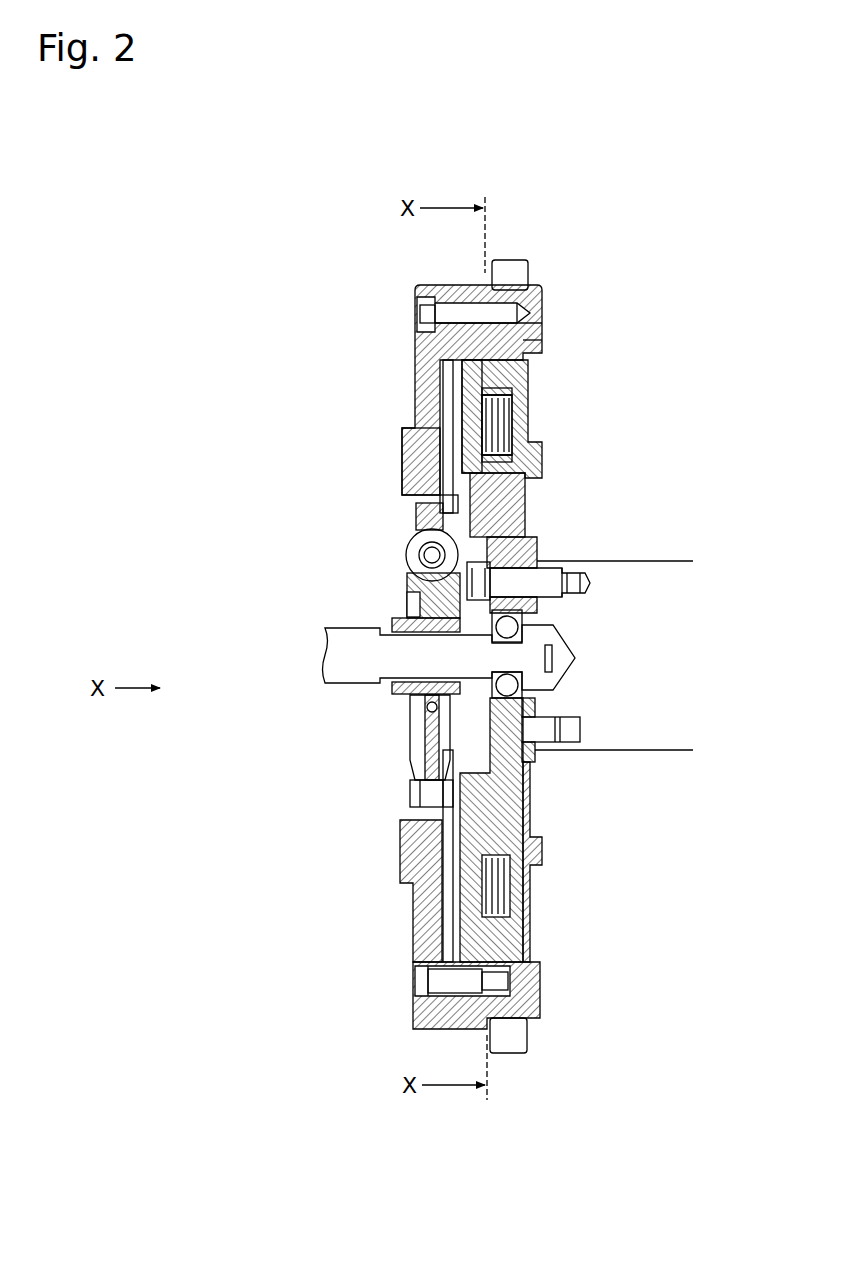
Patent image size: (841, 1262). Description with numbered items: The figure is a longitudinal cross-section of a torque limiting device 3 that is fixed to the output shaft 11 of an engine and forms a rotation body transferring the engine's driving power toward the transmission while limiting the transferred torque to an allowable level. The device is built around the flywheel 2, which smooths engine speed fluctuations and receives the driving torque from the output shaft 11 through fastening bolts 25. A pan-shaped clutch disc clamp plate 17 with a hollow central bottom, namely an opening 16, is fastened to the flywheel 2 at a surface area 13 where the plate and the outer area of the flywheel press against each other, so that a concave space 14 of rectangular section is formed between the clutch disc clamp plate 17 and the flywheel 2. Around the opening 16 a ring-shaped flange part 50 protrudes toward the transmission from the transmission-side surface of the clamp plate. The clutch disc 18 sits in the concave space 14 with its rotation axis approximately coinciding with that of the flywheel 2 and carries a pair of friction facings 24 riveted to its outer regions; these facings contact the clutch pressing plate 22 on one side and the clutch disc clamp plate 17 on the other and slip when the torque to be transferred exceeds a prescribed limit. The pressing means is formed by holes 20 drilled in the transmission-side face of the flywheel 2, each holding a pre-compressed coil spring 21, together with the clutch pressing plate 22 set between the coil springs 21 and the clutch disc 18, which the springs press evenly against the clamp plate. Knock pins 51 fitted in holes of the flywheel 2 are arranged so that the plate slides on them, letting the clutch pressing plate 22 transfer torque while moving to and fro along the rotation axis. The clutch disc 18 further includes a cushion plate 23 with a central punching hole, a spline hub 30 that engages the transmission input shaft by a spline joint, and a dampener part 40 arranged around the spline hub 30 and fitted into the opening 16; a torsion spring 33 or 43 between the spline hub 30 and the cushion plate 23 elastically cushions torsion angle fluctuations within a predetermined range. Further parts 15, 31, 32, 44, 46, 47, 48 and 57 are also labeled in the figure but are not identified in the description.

The flywheel 2 is at (538, 335).
The torque limiting device 3 is at (536, 206).
The output shaft 11 is at (580, 560).
The surface area 13 is at (450, 287).
The concave space 14 is at (530, 358).
The rod 15 is at (445, 402).
The opening 16 is at (408, 823).
The clutch disc clamp plate 17 is at (418, 357).
The clutch disc 18 is at (378, 610).
The holes 20 is at (520, 403).
The coil spring 21 is at (520, 423).
The clutch pressing plate 22 is at (530, 381).
The cushion plate 23 is at (525, 487).
The friction facings 24 is at (543, 324).
The fastening bolts 25 is at (557, 590).
The spline hub 30 is at (384, 711).
The shaft 31 is at (385, 694).
The bracket 32 is at (533, 747).
The torsion spring 33 is at (418, 720).
The dampener part 40 is at (386, 513).
The torsion spring 43 is at (407, 558).
The clamp 44 is at (417, 790).
The roller bracket 46 is at (402, 598).
The nut 47 is at (527, 552).
The roller shaft 48 is at (405, 573).
The flange part 50 is at (405, 460).
The knock pins 51 is at (413, 977).
The hub step 57 is at (525, 510).